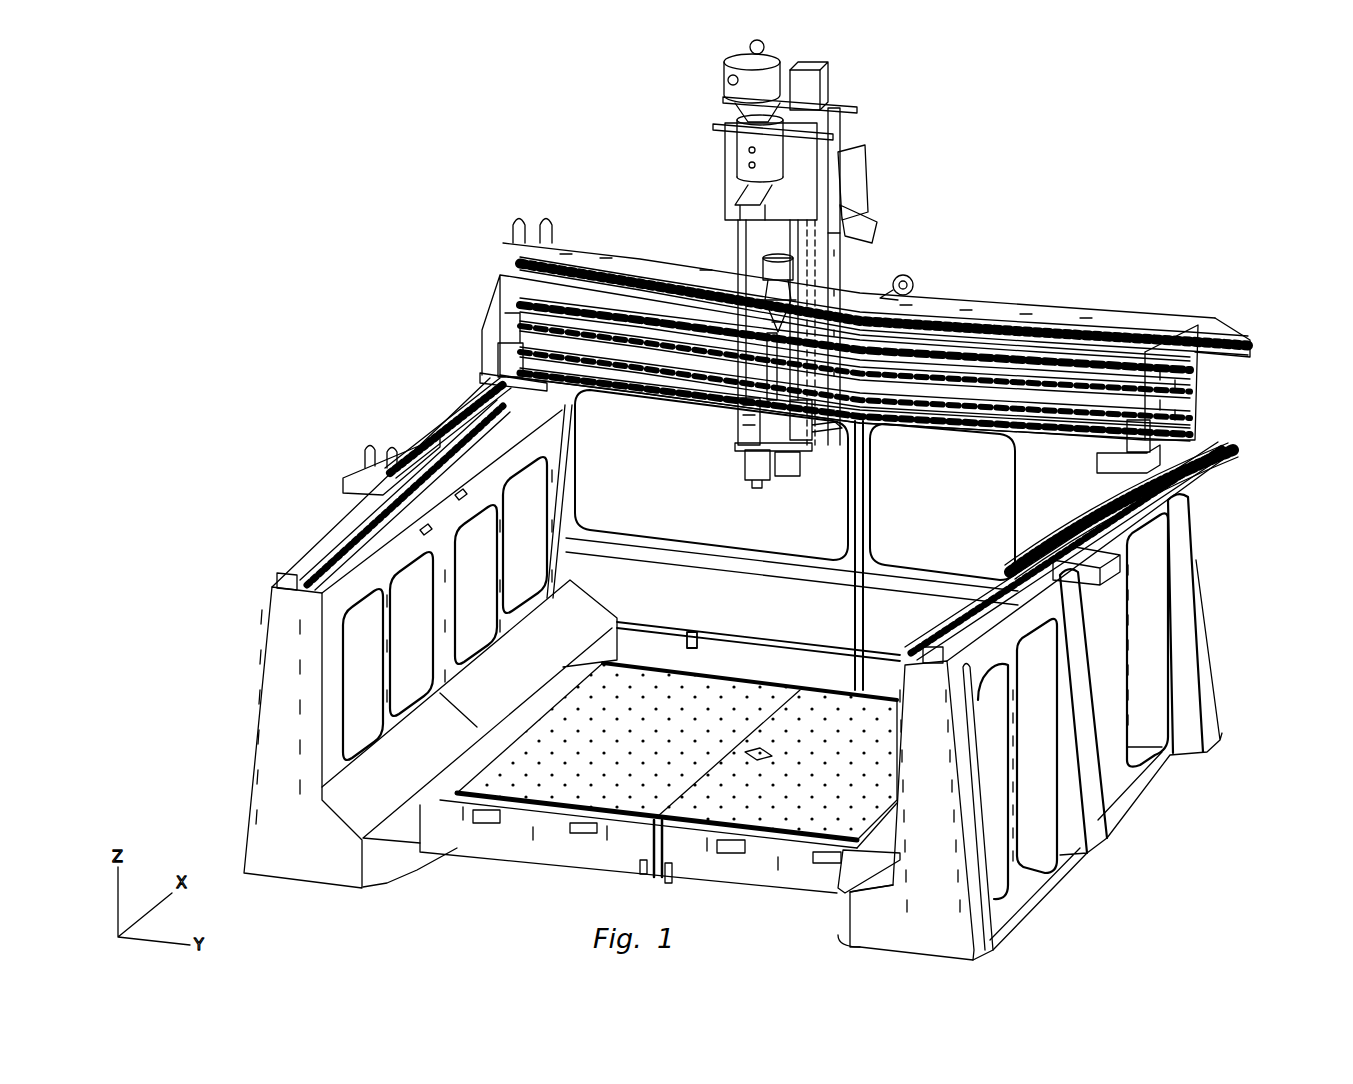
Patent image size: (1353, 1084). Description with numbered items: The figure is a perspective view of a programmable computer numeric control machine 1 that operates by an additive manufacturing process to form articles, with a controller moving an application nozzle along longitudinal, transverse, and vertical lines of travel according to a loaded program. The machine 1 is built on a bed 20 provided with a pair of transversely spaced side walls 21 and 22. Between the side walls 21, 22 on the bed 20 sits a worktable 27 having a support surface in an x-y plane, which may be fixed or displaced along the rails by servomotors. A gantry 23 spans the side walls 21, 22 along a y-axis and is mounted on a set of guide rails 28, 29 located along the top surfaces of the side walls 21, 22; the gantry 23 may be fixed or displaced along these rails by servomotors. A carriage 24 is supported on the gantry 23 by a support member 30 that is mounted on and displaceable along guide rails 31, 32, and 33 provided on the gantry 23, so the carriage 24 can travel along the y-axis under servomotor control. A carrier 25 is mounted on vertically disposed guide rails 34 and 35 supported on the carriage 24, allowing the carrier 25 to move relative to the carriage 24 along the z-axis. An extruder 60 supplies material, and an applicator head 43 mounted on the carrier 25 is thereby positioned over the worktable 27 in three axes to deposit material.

The CNC machine 1 is at (748, 500).
The bed 20 is at (513, 833).
The side wall 21 is at (270, 682).
The side wall 22 is at (1200, 598).
The gantry 23 is at (865, 346).
The carriage 24 is at (840, 193).
The carrier 25 is at (726, 315).
The worktable 27 is at (780, 680).
The guide rail 28 is at (353, 520).
The guide rail 29 is at (990, 615).
The support member 30 is at (846, 273).
The guide rail 31 is at (1010, 320).
The guide rail 32 is at (965, 345).
The guide rail 33 is at (987, 430).
The guide rail 34 is at (745, 395).
The guide rail 35 is at (813, 407).
The applicator head 43 is at (742, 470).
The extruder 60 is at (783, 284).